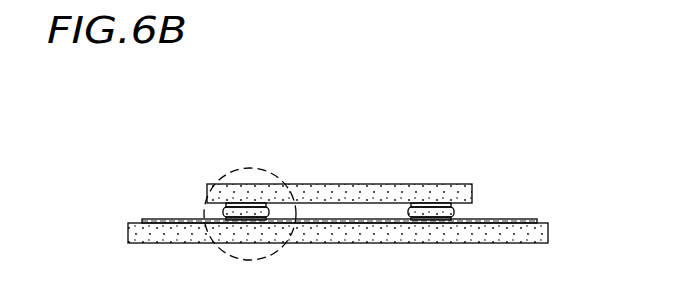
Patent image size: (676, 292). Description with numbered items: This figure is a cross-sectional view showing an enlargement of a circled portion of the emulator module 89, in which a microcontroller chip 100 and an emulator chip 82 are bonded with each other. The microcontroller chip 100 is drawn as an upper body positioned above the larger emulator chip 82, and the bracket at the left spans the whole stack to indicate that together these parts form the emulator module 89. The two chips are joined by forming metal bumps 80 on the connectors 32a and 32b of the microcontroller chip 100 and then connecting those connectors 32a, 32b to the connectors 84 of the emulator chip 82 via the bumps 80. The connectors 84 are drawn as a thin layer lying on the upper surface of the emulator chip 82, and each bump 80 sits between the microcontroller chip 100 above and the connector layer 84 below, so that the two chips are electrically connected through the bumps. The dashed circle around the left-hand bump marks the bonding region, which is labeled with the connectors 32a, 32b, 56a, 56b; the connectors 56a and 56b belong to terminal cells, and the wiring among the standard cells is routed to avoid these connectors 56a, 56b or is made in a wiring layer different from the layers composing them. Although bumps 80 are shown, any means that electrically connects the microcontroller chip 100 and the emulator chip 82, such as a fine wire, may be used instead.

The connector 32a is at (193, 187).
The connector 32b is at (193, 187).
The connector 56a is at (193, 187).
The connector 56b is at (243, 207).
The metal bump 80 is at (416, 213).
The emulator chip 82 is at (549, 232).
The connector 84 is at (512, 219).
The emulator module 89 is at (102, 178).
The microcontroller chip 100 is at (458, 193).